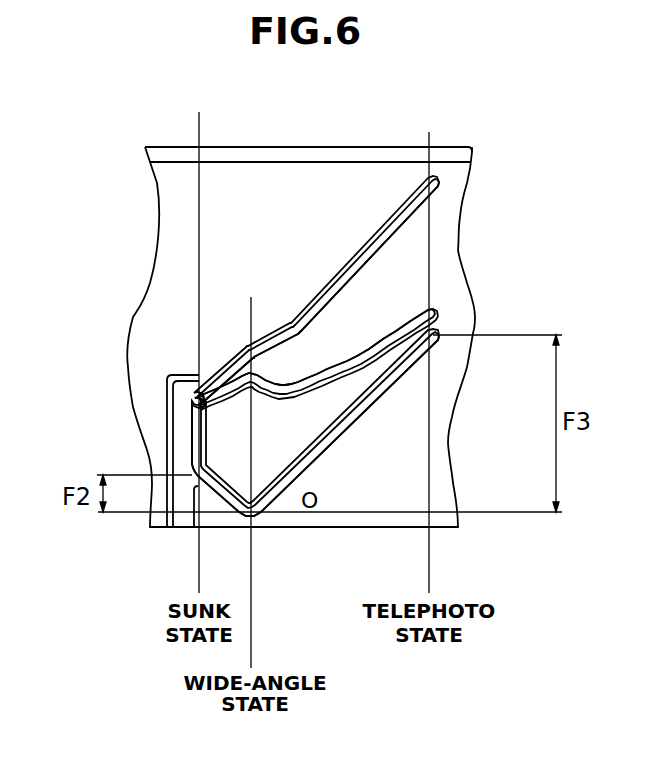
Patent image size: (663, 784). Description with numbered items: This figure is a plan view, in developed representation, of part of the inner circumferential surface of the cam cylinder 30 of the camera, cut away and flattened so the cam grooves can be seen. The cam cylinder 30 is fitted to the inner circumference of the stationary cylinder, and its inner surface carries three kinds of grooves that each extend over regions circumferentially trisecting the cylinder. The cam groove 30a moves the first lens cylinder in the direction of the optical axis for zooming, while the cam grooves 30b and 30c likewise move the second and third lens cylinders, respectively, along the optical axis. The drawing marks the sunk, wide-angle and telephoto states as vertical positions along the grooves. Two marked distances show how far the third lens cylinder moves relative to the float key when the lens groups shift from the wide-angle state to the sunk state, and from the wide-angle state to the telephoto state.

The cam cylinder 30 is at (176, 190).
The cam groove 30a is at (297, 313).
The cam groove 30b is at (412, 318).
The cam groove 30c is at (393, 378).